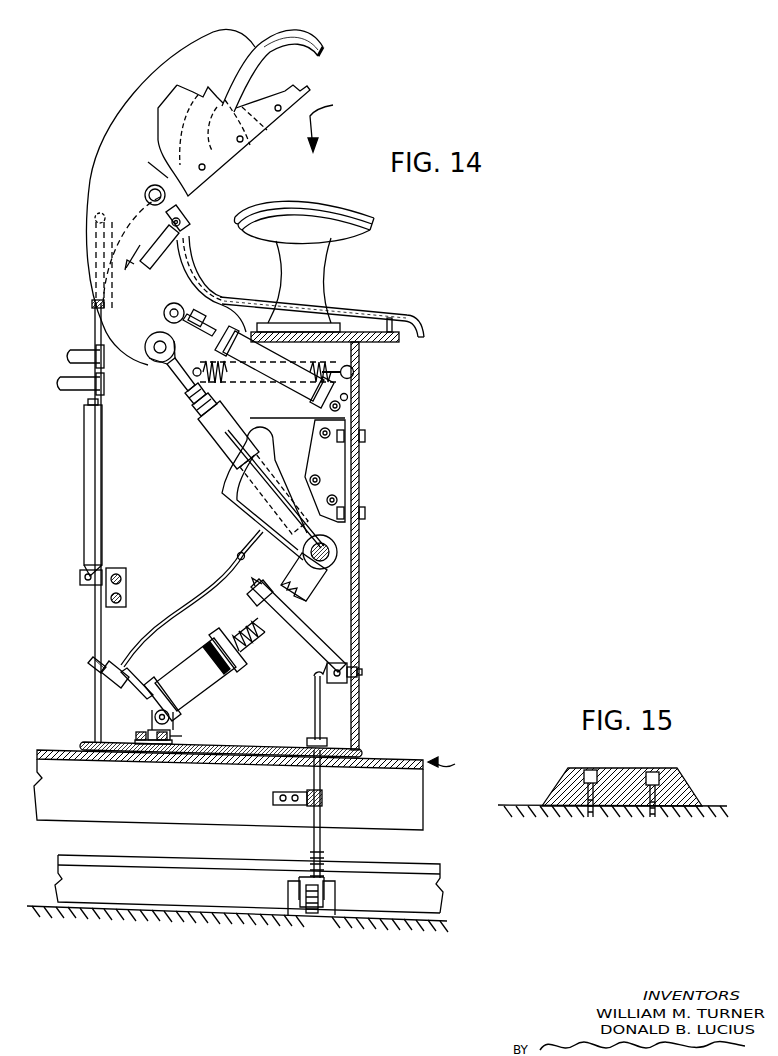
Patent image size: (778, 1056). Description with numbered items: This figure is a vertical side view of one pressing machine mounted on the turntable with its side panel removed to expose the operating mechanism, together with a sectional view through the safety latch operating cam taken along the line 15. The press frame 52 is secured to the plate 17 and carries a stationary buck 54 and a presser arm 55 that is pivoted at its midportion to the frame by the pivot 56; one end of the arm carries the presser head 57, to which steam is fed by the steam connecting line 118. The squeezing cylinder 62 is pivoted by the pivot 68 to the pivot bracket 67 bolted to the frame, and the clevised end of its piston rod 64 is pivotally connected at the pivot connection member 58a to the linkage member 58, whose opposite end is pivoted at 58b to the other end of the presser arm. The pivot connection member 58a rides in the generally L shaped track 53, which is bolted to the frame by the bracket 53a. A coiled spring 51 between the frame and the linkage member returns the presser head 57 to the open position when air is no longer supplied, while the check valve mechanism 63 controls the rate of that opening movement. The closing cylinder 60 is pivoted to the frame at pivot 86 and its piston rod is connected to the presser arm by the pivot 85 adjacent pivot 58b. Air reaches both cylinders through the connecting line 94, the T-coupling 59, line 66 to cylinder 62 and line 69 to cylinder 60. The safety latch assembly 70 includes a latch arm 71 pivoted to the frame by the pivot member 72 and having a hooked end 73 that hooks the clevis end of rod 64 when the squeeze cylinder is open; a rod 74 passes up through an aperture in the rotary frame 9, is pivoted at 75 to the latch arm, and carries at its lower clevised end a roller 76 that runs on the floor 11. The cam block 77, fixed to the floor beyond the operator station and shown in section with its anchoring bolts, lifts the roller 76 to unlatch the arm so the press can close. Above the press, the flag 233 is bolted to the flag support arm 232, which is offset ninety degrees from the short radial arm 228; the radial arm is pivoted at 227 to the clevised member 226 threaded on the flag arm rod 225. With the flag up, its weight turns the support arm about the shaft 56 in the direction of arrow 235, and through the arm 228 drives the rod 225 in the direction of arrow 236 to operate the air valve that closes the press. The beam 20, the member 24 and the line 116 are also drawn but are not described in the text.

In FIG. 14, the rotary frame 9 is at (448, 761).
In FIG. 14, the floor 11 is at (188, 915).
In FIG. 14, the section line 15 is at (308, 838).
In FIG. 14, the plate 17 is at (396, 762).
In FIG. 14, the support beam 20 is at (402, 811).
In FIG. 14, the floor beam 24 is at (396, 905).
In FIG. 14, the coiled spring 51 is at (355, 362).
In FIG. 14, the press frame 52 is at (110, 648).
In FIG. 14, the L shaped track 53 is at (222, 484).
In FIG. 14, the bracket 53a is at (347, 490).
In FIG. 14, the stationary buck 54 is at (325, 236).
In FIG. 14, the presser arm 55 is at (132, 120).
In FIG. 14, the pivot 56 is at (145, 193).
In FIG. 14, the presser head 57 is at (309, 41).
In FIG. 14, the linkage member 58 is at (218, 441).
In FIG. 14, the pivot connection member 58a is at (338, 551).
In FIG. 14, the pivot 58b is at (161, 364).
In FIG. 14, the T-coupling 59 is at (110, 678).
In FIG. 14, the closing cylinder 60 is at (308, 389).
In FIG. 14, the squeezing cylinder 62 is at (200, 690).
In FIG. 14, the check valve mechanism 63 is at (84, 503).
In FIG. 14, the piston rod 64 is at (300, 595).
In FIG. 14, the line 66 is at (150, 687).
In FIG. 14, the pivot bracket 67 is at (174, 727).
In FIG. 14, the pivot 68 is at (154, 715).
In FIG. 14, the line 69 is at (216, 580).
In FIG. 14, the safety latch assembly 70 is at (314, 708).
In FIG. 14, the latch arm 71 is at (313, 657).
In FIG. 14, the pivot member 72 is at (350, 666).
In FIG. 14, the hooked end 73 is at (251, 594).
In FIG. 14, the rod 74 is at (430, 321).
In FIG. 14, the pivot connection 75 is at (313, 673).
In FIG. 14, the roller 76 is at (310, 916).
In FIG. 14, the cam block 77 is at (336, 893).
In FIG. 15, the cam block 77 is at (560, 776).
In FIG. 14, the pivot 85 is at (164, 317).
In FIG. 14, the pivot 86 is at (347, 399).
In FIG. 14, the connecting line 94 is at (90, 666).
In FIG. 14, the conduit 116 is at (72, 386).
In FIG. 14, the steam connecting line 118 is at (73, 350).
In FIG. 14, the flag arm rod 225 is at (170, 268).
In FIG. 14, the clevised member 226 is at (176, 234).
In FIG. 14, the pivot 227 is at (181, 224).
In FIG. 14, the short radial arm 228 is at (184, 216).
In FIG. 14, the flag support arm 232 is at (163, 186).
In FIG. 14, the flag 233 is at (190, 98).
In FIG. 14, the arrow 235 is at (334, 123).
In FIG. 14, the arrow 236 is at (117, 255).